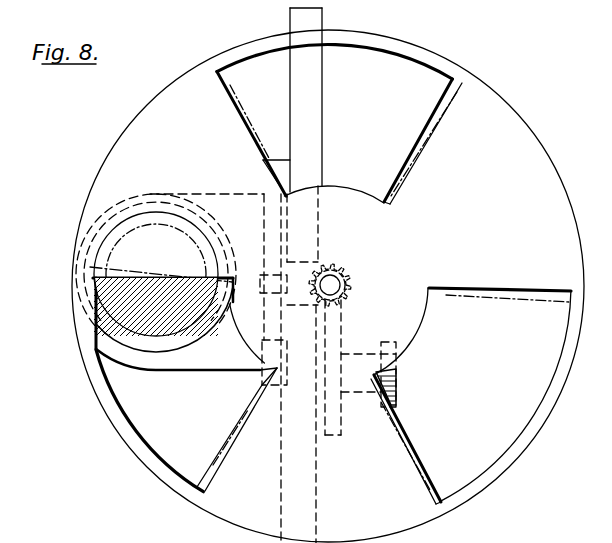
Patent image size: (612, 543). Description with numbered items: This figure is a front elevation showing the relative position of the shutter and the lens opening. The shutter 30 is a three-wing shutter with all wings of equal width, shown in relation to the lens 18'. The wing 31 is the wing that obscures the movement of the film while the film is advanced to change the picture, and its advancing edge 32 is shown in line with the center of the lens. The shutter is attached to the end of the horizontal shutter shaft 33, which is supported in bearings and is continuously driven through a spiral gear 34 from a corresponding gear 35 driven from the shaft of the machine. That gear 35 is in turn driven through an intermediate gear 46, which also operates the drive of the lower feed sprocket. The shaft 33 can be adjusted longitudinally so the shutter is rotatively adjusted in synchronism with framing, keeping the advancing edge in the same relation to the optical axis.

The shutter 30 is at (230, 44).
The wing 31 is at (148, 127).
The advancing edge 32 is at (175, 277).
The shutter shaft 33 is at (338, 283).
The spiral gear 34 is at (347, 263).
The gear 35 is at (342, 327).
The intermediate gear 46 is at (396, 387).
The lens 18' is at (138, 282).